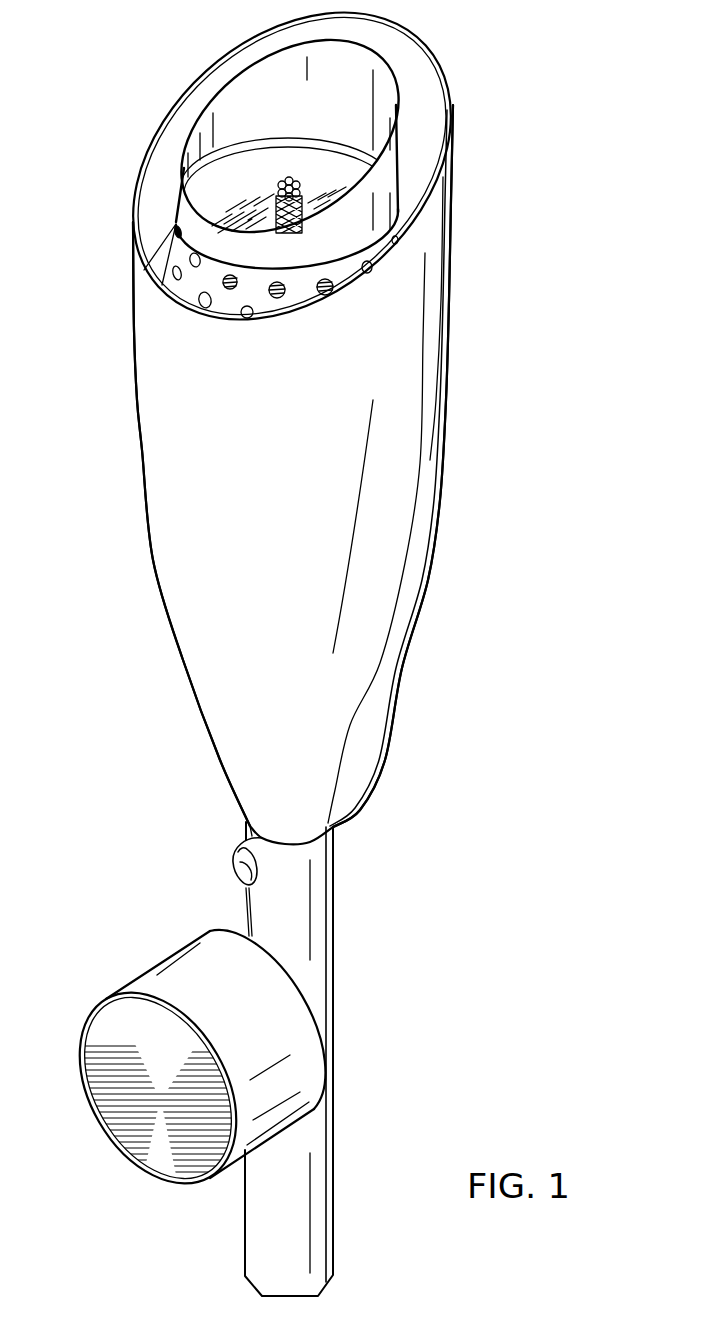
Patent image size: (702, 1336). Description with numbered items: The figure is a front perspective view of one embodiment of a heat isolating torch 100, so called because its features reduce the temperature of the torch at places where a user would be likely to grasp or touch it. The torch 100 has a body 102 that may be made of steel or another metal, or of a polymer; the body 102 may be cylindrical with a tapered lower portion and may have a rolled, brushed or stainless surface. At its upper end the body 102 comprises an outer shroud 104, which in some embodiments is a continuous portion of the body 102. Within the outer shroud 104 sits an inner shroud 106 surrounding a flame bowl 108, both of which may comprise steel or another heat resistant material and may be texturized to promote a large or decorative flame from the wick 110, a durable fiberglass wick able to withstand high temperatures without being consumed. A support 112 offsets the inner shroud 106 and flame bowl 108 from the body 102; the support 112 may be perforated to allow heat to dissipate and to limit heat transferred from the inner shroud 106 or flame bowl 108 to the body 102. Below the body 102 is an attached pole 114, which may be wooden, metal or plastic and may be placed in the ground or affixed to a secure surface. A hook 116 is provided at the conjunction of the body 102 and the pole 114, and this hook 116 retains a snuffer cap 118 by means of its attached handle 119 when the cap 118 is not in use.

The torch 100 is at (477, 43).
The body 102 is at (170, 638).
The outer shroud 104 is at (403, 28).
The inner shroud 106 is at (247, 63).
The flame bowl 108 is at (260, 207).
The wick 110 is at (288, 180).
The support 112 is at (173, 224).
The pole 114 is at (333, 935).
The hook 116 is at (237, 847).
The snuffer cap 118 is at (150, 960).
The handle 119 is at (242, 905).